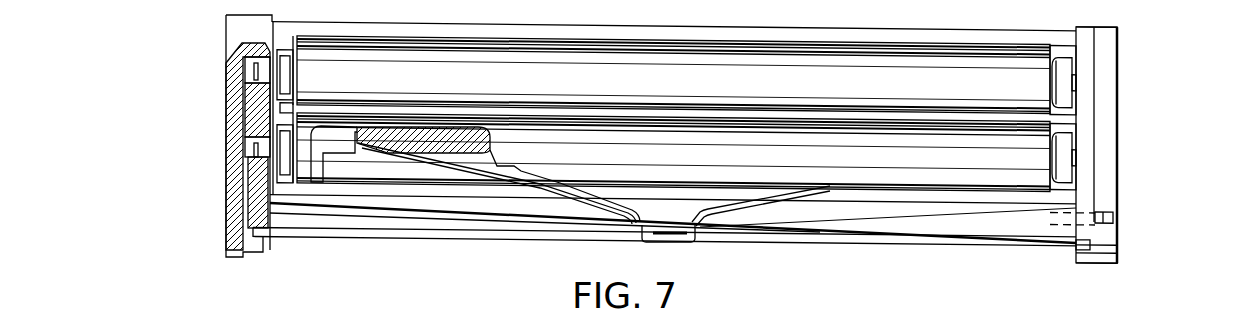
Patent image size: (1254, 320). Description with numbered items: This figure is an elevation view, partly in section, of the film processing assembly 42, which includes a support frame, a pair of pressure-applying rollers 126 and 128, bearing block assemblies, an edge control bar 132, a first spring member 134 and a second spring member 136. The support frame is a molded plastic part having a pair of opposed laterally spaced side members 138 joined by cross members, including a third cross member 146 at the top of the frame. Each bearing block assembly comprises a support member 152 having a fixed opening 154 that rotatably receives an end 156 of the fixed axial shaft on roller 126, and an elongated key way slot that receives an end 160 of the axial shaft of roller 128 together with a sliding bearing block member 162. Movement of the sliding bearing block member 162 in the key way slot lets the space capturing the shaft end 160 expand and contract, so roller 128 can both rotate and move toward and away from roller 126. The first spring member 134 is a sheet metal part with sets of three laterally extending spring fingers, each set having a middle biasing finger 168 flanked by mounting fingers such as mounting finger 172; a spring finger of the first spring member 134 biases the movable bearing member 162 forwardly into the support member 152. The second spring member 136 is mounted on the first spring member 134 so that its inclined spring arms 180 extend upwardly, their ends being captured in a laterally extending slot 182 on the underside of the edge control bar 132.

The film processing assembly 42 is at (1125, 84).
The pressure-applying roller 126 is at (707, 80).
The pressure-applying roller 128 is at (900, 163).
The edge control bar 132 is at (482, 142).
The first spring member 134 is at (599, 225).
The second spring member 136 is at (697, 244).
The side member 138 is at (241, 135).
The third cross member 146 is at (838, 29).
The support member 152 is at (262, 110).
The fixed opening 154 is at (252, 77).
The end of fixed axial shaft 156 is at (241, 62).
The end of axial shaft 160 is at (252, 157).
The sliding bearing block member 162 is at (253, 200).
The middle biasing finger 168 is at (335, 238).
The mounting finger 172 is at (1112, 217).
The inclined spring arm 180 is at (413, 157).
The laterally extending slot 182 is at (340, 143).